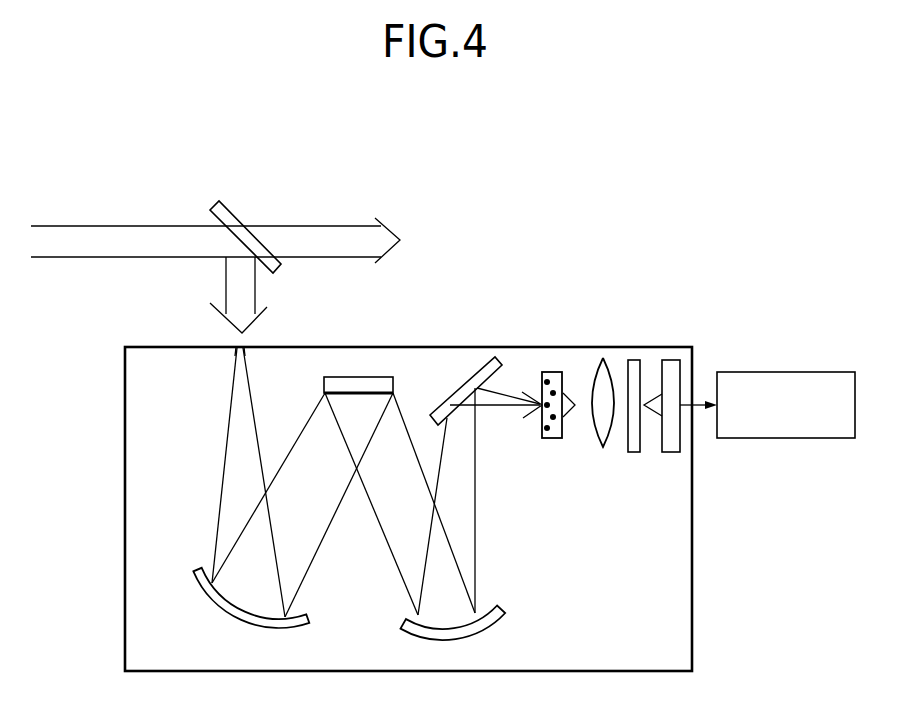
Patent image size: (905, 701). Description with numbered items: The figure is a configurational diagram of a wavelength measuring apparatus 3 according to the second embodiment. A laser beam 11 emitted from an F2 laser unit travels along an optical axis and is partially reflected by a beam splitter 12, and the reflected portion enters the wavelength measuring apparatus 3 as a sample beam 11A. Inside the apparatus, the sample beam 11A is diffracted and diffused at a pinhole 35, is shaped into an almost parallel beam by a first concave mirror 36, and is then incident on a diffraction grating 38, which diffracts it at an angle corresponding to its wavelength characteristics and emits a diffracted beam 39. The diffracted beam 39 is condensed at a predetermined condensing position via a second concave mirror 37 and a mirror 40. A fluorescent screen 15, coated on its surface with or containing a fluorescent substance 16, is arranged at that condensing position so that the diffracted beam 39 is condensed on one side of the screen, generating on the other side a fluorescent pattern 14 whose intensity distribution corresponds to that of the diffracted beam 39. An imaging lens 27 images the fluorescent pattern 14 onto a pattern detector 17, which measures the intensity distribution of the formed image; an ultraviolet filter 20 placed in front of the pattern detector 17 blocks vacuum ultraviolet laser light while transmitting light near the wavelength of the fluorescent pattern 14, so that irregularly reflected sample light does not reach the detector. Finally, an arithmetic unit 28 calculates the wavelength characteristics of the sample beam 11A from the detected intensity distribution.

The wavelength measuring apparatus 3 is at (659, 246).
The laser beam 11 is at (115, 238).
The beam splitter 12 is at (235, 210).
The sample beam 11A is at (245, 292).
The pinhole 35 is at (240, 347).
The first concave mirror 36 is at (198, 587).
The second concave mirror 37 is at (505, 610).
The diffraction grating 38 is at (388, 376).
The diffracted beam 39 is at (407, 576).
The mirror 40 is at (495, 357).
The fluorescent pattern 14 is at (567, 398).
The fluorescent screen 15 is at (562, 438).
The fluorescent substance 16 is at (543, 433).
The imaging lens 27 is at (610, 370).
The ultraviolet filter 20 is at (641, 373).
The pattern detector 17 is at (672, 453).
The arithmetic unit 28 is at (783, 440).